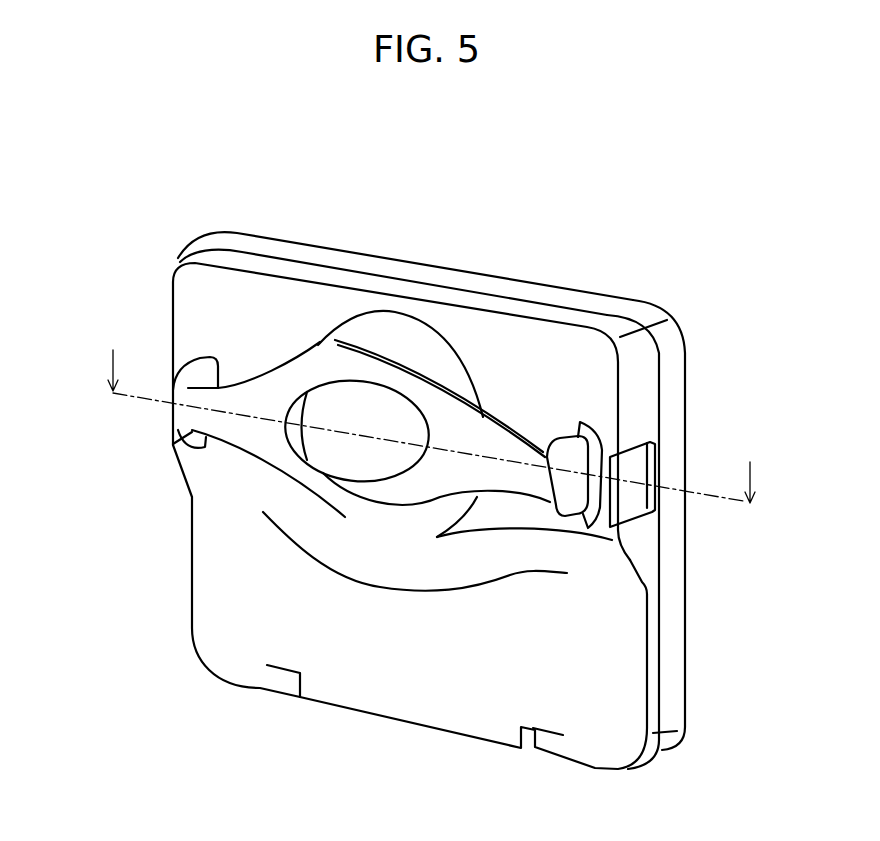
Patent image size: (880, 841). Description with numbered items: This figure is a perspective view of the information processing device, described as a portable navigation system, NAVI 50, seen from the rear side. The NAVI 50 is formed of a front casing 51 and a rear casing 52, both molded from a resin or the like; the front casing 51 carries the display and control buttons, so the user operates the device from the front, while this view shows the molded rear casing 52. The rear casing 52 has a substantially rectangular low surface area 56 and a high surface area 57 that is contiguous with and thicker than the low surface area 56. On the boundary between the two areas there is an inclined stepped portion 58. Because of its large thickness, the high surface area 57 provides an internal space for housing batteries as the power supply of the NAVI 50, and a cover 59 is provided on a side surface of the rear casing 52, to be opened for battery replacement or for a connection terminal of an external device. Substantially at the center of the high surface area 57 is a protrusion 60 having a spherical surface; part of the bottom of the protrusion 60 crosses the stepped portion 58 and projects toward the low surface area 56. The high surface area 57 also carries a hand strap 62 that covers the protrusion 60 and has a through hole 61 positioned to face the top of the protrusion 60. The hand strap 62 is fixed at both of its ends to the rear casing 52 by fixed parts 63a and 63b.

The NAVI 50 is at (431, 200).
The front casing 51 is at (550, 283).
The rear casing 52 is at (593, 320).
The low surface area 56 is at (605, 645).
The high surface area 57 is at (230, 457).
The stepped portion 58 is at (363, 520).
The cover 59 is at (635, 500).
The protrusion 60 is at (395, 332).
The through hole 61 is at (333, 395).
The hand strap 62 is at (262, 437).
The fixed part 63a is at (203, 360).
The fixed part 63b is at (583, 433).